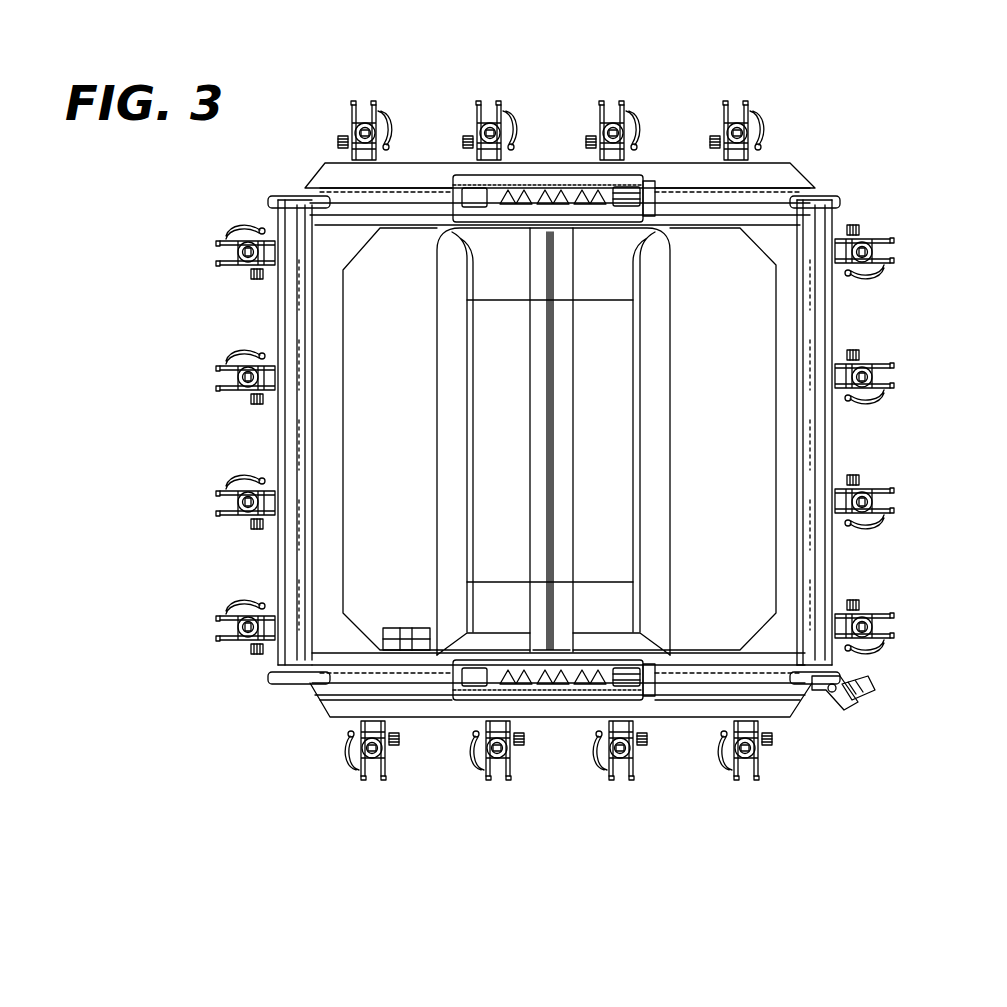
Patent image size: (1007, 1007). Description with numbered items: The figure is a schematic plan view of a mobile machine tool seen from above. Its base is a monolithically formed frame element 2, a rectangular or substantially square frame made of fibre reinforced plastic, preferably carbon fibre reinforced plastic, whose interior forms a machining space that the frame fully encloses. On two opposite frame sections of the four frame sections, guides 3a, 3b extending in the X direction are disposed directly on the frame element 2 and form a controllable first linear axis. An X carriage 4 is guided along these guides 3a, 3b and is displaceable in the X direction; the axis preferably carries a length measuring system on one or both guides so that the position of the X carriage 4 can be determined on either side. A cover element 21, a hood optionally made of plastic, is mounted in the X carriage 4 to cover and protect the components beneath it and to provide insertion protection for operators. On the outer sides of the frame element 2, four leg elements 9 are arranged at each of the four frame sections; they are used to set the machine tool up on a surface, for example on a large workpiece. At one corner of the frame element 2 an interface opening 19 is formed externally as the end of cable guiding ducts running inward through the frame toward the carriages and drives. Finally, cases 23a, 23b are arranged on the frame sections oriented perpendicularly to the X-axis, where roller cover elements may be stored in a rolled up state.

The frame element 2 is at (422, 177).
The guide 3a is at (683, 195).
The guide 3b is at (350, 693).
The X carriage 4 is at (510, 212).
The leg element 9 is at (356, 133).
The interface opening 19 is at (843, 705).
The cover element 21 is at (612, 378).
The case 23a is at (822, 440).
The case 23b is at (287, 305).